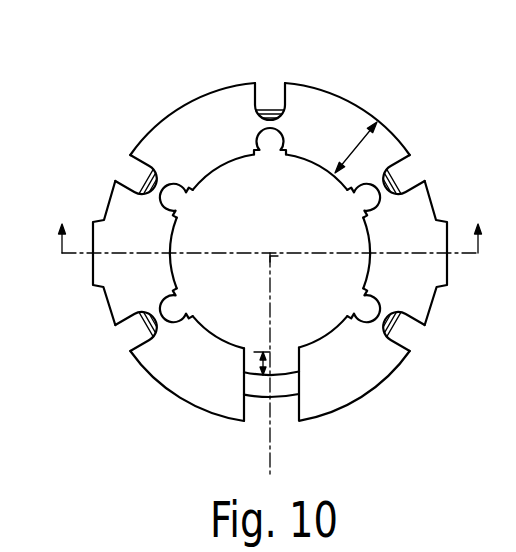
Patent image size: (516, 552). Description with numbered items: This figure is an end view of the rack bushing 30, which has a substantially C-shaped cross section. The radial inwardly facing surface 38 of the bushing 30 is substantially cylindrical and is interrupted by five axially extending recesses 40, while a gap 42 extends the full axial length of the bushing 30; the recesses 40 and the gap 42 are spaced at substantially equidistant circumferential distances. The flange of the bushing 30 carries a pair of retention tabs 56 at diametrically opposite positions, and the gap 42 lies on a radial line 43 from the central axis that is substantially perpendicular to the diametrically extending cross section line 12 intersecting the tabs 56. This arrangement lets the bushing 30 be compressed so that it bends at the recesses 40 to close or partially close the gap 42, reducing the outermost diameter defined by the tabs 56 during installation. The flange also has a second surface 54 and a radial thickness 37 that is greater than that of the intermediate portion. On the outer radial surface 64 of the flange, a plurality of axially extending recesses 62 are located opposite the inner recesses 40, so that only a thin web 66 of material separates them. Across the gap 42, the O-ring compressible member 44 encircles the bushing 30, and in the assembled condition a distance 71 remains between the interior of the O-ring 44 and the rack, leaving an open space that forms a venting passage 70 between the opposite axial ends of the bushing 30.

The rack bushing 30 is at (148, 80).
The outer radial surface 64 is at (210, 95).
The axially extending recesses 62 is at (258, 83).
The thin web 66 is at (273, 122).
The radial thickness 37 is at (357, 150).
The retention tabs 56 is at (93, 223).
The cross section line 12 is at (272, 334).
The axially extending recesses 40 is at (272, 150).
The radial inwardly facing surface 38 is at (234, 158).
The radial line 43 is at (267, 259).
The distance 71 is at (258, 362).
The second surface 54 is at (178, 388).
The radially compressible member 44 is at (262, 394).
The gap 42 is at (285, 418).
The venting passage 70 is at (286, 368).